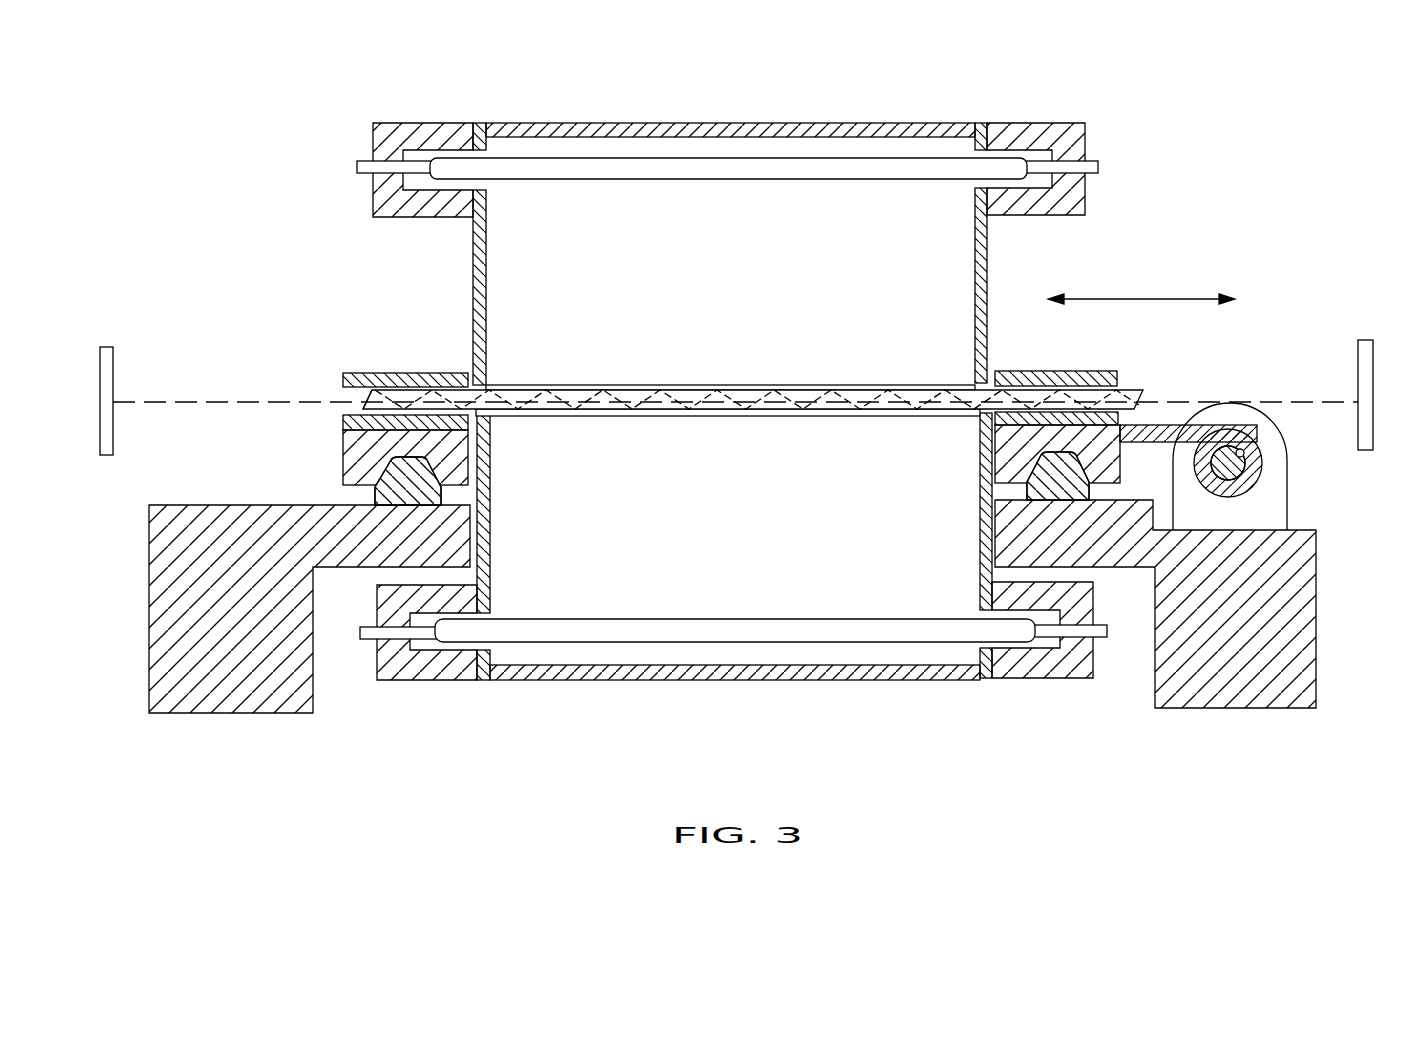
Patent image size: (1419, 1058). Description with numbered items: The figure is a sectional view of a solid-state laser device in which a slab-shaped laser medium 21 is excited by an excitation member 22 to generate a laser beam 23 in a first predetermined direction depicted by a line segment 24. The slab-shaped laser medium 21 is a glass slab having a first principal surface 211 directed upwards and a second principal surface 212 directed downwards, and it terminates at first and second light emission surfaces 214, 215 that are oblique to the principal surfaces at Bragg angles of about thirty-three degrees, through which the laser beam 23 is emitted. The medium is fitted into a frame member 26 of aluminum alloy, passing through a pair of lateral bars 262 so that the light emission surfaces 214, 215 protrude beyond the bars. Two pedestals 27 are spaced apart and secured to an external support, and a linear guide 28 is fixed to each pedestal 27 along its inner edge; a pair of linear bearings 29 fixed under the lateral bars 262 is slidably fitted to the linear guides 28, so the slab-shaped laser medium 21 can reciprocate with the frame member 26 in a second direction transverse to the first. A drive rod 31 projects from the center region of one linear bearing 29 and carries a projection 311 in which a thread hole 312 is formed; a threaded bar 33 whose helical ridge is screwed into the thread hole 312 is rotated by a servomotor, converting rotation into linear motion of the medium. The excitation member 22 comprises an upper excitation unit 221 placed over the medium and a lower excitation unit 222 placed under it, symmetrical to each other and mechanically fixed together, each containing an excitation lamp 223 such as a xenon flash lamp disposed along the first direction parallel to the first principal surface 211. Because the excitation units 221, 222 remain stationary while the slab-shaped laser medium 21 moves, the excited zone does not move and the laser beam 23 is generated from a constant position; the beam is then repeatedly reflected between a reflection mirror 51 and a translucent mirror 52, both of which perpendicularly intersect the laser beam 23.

The slab-shaped laser medium 21 is at (705, 383).
The first principal surface 211 is at (790, 389).
The second principal surface 212 is at (760, 416).
The first light emission surface 214 is at (1120, 420).
The second light emission surface 215 is at (360, 406).
The excitation member 22 is at (720, 389).
The upper excitation unit 221 is at (930, 120).
The lower excitation unit 222 is at (875, 681).
The excitation lamp 223 is at (745, 181).
The laser beam 23 is at (242, 400).
The first predetermined direction 24 is at (1140, 299).
The frame member 26 is at (780, 370).
The lateral bars 262 is at (390, 372).
The pedestals 27 is at (230, 708).
The linear guide 28 is at (375, 496).
The linear bearings 29 is at (343, 463).
The drive rod 31 is at (1234, 429).
The projection 311 is at (1245, 492).
The thread hole 312 is at (1248, 451).
The threaded bar 33 is at (1250, 460).
The reflection mirror 51 is at (106, 347).
The translucent mirror 52 is at (1367, 340).